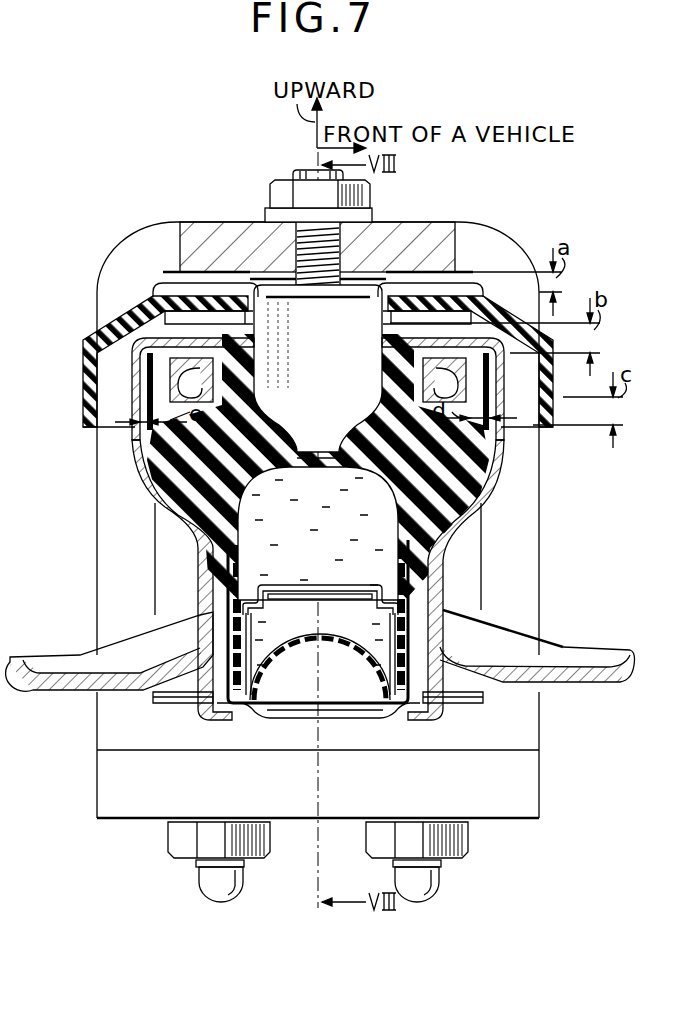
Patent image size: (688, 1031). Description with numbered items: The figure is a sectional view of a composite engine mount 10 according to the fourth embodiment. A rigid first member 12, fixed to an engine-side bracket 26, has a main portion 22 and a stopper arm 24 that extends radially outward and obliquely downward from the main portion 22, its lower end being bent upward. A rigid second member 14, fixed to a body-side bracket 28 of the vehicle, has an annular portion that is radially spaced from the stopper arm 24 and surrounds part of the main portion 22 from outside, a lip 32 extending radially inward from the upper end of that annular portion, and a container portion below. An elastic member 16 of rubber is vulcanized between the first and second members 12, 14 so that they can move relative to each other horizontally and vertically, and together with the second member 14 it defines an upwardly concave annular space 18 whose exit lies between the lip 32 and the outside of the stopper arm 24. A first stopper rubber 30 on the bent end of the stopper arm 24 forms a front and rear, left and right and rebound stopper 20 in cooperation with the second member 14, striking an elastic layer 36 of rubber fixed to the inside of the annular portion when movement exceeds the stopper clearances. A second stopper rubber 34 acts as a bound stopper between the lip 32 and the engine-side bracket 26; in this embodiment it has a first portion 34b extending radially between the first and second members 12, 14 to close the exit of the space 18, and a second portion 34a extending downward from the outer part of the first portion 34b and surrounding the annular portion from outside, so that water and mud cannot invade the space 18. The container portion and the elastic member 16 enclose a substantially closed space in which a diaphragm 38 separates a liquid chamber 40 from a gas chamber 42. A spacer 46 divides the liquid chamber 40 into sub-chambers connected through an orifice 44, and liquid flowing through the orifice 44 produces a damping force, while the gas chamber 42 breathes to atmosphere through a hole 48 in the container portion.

The composite engine mount 10 is at (463, 466).
The first member 12 is at (345, 300).
The second member 14 is at (480, 510).
The elastic member 16 is at (495, 504).
The space 18 is at (528, 420).
The stopper 20 is at (497, 300).
The main portion 22 is at (337, 337).
The stopper arm 24 is at (463, 330).
The engine-side bracket 26 is at (225, 232).
The body-side bracket 28 is at (560, 688).
The first stopper rubber 30 is at (83, 368).
The lip 32 is at (456, 344).
The second stopper rubber 34 is at (95, 340).
The second portion 34a is at (88, 412).
The first portion 34b is at (177, 300).
The elastic layer 36 is at (142, 322).
The diaphragm 38 is at (318, 638).
The liquid chamber 40 is at (293, 548).
The gas chamber 42 is at (338, 688).
The orifice 44 is at (443, 605).
The spacer 46 is at (290, 573).
The hole 48 is at (287, 718).